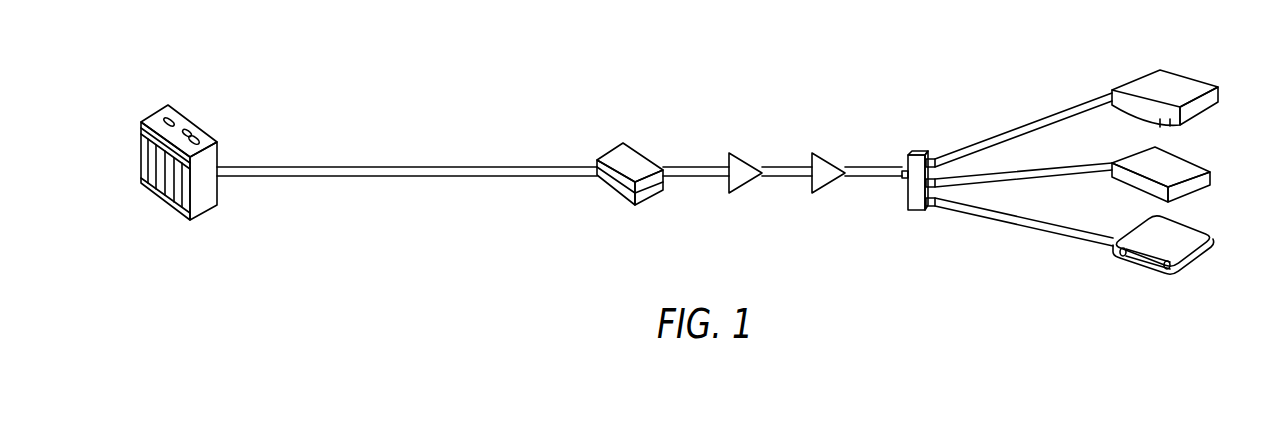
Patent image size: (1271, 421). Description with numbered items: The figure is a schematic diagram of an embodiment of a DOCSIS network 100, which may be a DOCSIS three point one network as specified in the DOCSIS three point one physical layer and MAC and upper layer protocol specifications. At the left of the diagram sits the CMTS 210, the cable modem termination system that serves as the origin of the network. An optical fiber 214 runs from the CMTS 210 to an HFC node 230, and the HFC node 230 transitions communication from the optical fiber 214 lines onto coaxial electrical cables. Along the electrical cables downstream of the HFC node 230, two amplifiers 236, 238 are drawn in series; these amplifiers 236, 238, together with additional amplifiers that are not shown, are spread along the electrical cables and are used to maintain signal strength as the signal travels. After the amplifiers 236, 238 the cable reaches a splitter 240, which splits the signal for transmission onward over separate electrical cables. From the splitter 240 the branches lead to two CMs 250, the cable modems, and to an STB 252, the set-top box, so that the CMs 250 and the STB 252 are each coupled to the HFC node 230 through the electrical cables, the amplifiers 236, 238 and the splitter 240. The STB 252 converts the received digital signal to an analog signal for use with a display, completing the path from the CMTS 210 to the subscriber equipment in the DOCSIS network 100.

The DOCSIS network 100 is at (184, 63).
The CMTS 210 is at (190, 130).
The optical fiber 214 is at (446, 166).
The HFC node 230 is at (644, 156).
The amplifier 236 is at (740, 192).
The amplifier 238 is at (822, 192).
The splitter 240 is at (915, 212).
The CM 250 is at (1185, 77).
The STB 252 is at (1193, 262).